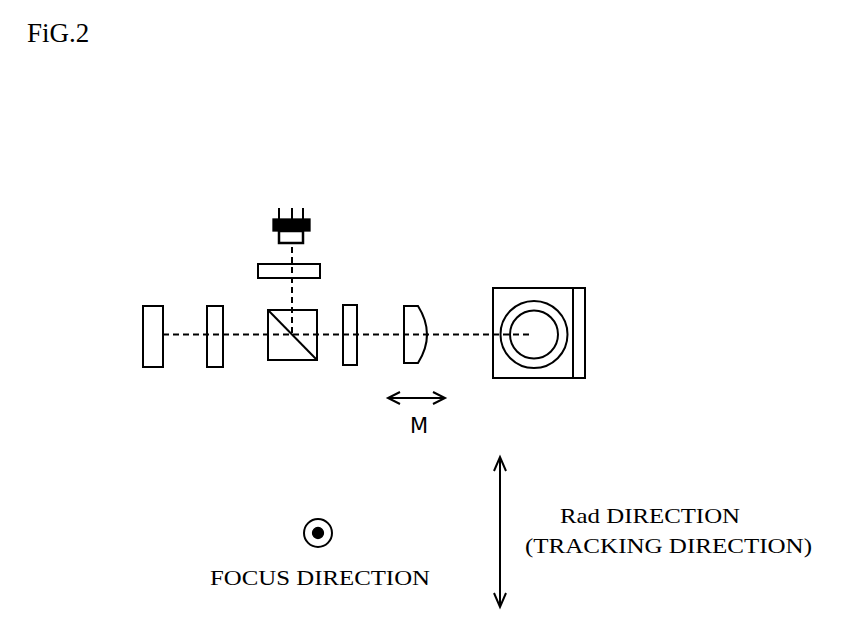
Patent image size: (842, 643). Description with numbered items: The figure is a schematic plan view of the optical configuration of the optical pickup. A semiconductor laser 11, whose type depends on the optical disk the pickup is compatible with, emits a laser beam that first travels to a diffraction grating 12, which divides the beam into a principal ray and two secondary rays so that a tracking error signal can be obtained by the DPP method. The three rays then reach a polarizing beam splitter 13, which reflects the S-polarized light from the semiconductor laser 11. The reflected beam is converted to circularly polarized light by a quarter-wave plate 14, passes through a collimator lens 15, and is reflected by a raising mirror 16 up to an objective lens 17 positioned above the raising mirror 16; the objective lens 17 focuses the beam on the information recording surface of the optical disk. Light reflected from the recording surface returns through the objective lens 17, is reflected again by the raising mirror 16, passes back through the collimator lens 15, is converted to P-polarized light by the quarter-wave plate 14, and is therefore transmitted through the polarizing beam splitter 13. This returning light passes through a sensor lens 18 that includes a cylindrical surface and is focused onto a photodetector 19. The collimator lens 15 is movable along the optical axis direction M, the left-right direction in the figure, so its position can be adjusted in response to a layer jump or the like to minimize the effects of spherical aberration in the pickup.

The semiconductor laser 11 is at (273, 223).
The diffraction grating 12 is at (258, 270).
The polarizing beam splitter 13 is at (292, 365).
The quarter-wave plate 14 is at (353, 367).
The collimator lens 15 is at (412, 305).
The raising mirror 16 is at (577, 288).
The objective lens 17 is at (537, 363).
The sensor lens 18 is at (218, 306).
The photodetector 19 is at (150, 367).